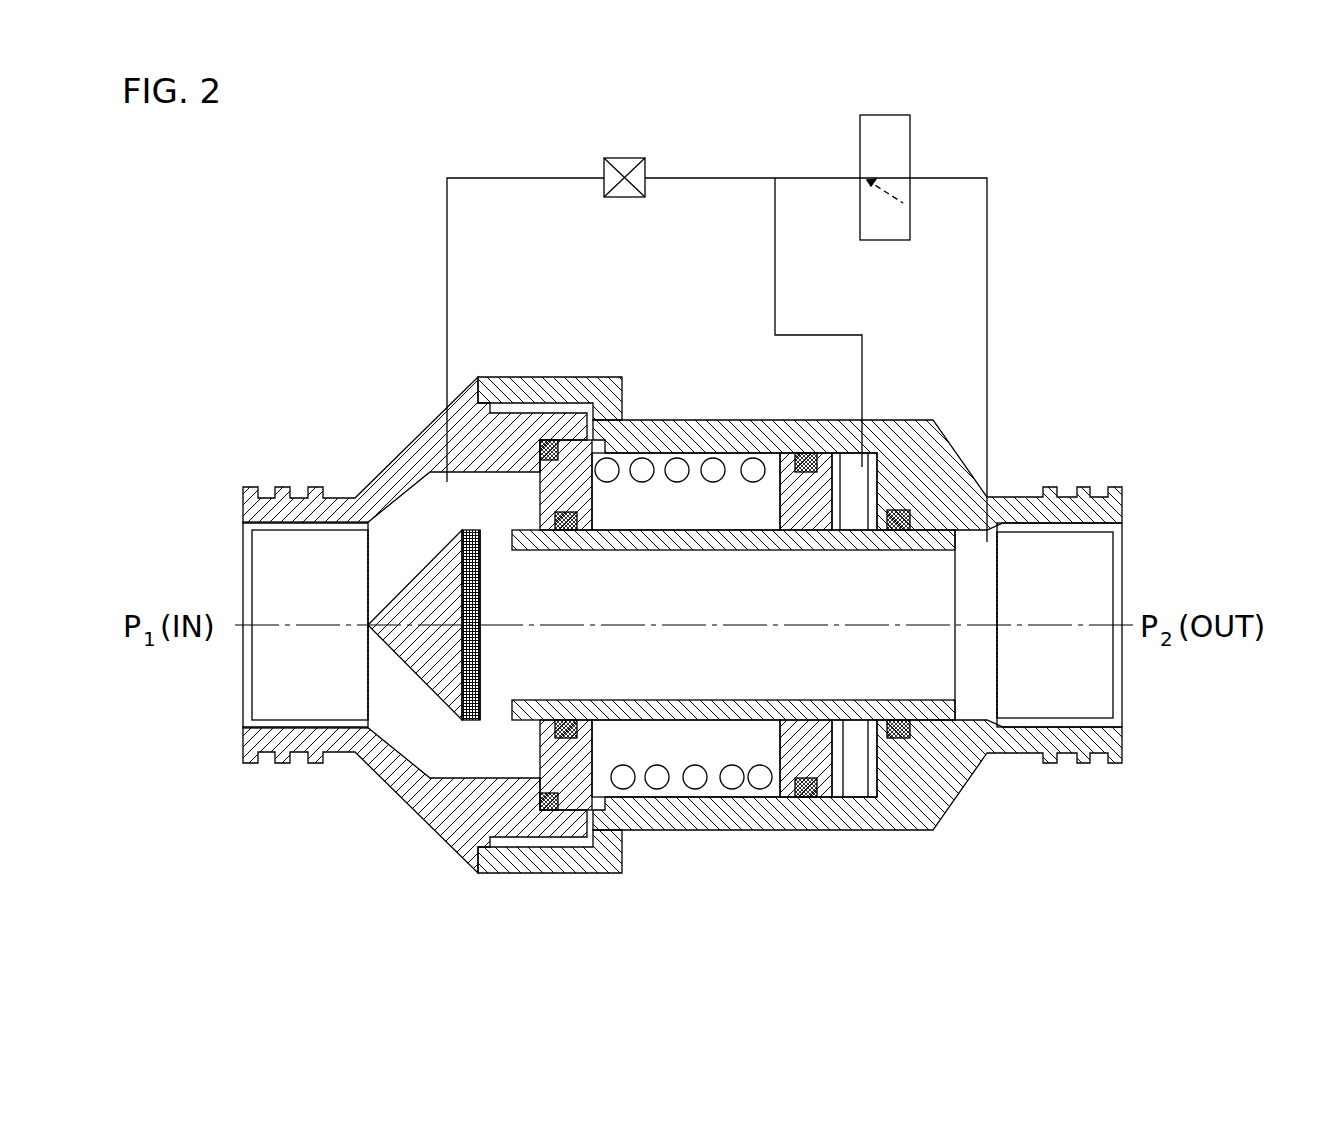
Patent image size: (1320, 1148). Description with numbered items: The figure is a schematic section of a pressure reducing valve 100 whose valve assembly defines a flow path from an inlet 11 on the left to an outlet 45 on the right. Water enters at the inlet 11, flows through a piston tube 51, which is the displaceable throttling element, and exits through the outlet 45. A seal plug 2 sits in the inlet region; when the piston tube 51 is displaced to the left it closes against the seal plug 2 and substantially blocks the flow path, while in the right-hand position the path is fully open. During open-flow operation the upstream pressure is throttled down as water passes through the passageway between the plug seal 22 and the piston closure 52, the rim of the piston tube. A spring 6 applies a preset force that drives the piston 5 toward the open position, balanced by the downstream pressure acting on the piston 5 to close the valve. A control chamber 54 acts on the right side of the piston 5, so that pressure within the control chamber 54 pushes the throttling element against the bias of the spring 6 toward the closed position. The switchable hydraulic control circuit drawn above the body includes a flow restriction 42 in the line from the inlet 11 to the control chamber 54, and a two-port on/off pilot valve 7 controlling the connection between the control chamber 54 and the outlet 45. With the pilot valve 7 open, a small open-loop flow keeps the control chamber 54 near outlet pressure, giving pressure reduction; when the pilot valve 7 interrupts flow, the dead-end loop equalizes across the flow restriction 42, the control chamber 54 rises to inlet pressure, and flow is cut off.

The pressure reducing valve 100 is at (1132, 288).
The inlet 11 is at (258, 688).
The outlet 45 is at (1110, 560).
The seal plug 2 is at (420, 573).
The plug seal 22 is at (460, 660).
The piston closure 52 is at (507, 720).
The piston 5 is at (820, 780).
The piston tube 51 is at (680, 723).
The spring 6 is at (692, 777).
The control chamber 54 is at (850, 460).
The flow restriction 42 is at (604, 165).
The on/off pilot valve 7 is at (860, 158).